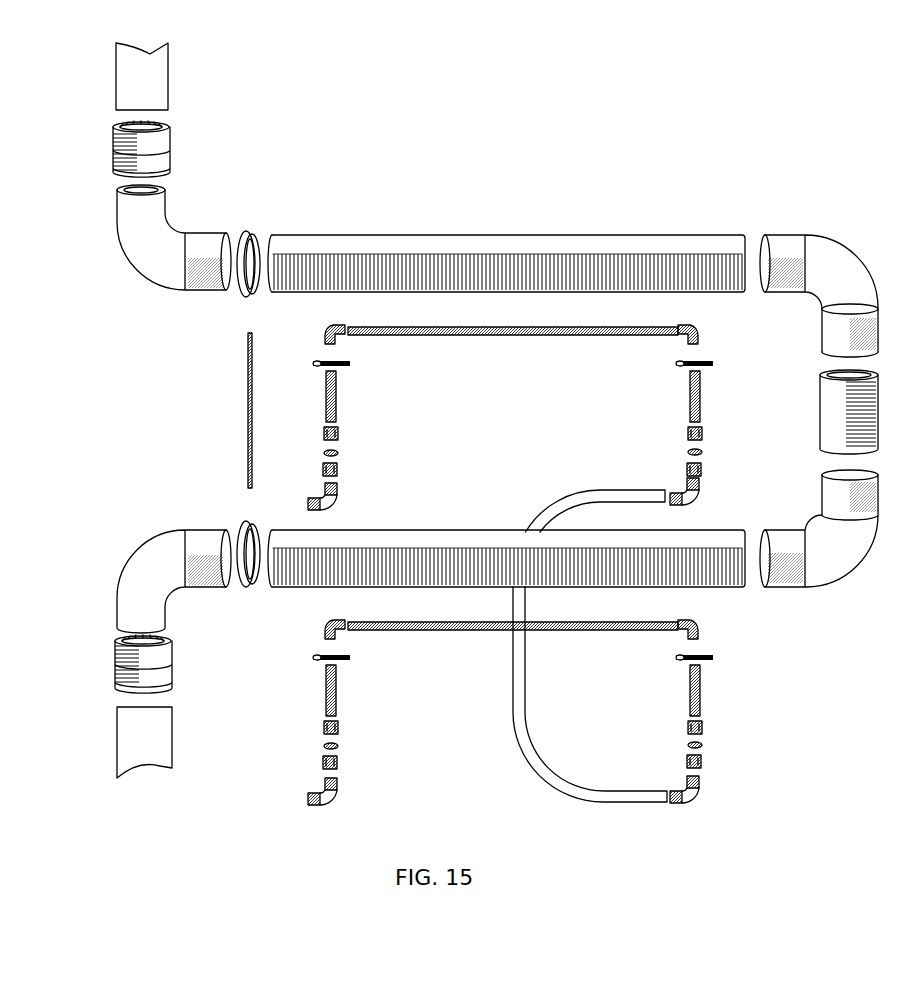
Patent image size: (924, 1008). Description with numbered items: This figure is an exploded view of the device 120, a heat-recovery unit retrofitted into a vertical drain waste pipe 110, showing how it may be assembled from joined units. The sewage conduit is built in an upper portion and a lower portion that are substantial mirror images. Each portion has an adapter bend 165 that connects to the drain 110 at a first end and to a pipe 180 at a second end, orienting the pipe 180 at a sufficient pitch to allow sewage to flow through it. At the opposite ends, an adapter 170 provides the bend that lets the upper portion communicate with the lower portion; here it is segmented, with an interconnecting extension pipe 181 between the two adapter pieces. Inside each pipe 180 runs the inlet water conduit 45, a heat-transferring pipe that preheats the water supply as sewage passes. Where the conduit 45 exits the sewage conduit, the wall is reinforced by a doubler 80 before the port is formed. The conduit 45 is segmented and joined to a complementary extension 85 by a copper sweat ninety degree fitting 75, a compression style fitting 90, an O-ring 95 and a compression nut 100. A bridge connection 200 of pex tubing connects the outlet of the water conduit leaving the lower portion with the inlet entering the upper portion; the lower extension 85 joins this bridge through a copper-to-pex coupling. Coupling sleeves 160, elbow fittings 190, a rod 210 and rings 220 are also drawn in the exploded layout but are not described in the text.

The conduit 45 is at (498, 337).
The copper sweat 90 degree fitting 75 is at (323, 330).
The doubler 80 is at (352, 364).
The extension 85 is at (340, 393).
The compression style fitting 90 is at (340, 433).
The O-ring 95 is at (322, 453).
The compression nut 100 is at (340, 472).
The drain waste pipe 110 is at (116, 80).
The device 120 is at (767, 140).
The coupling 160 is at (172, 149).
The adapter bend 165 is at (133, 258).
The adapter 170 is at (853, 262).
The pipe 180 is at (410, 236).
The interconnecting extension pipe 181 is at (872, 412).
The elbow fitting 190 is at (338, 500).
The bridge connection 200 is at (536, 742).
The rod 210 is at (252, 420).
The ring 220 is at (240, 522).